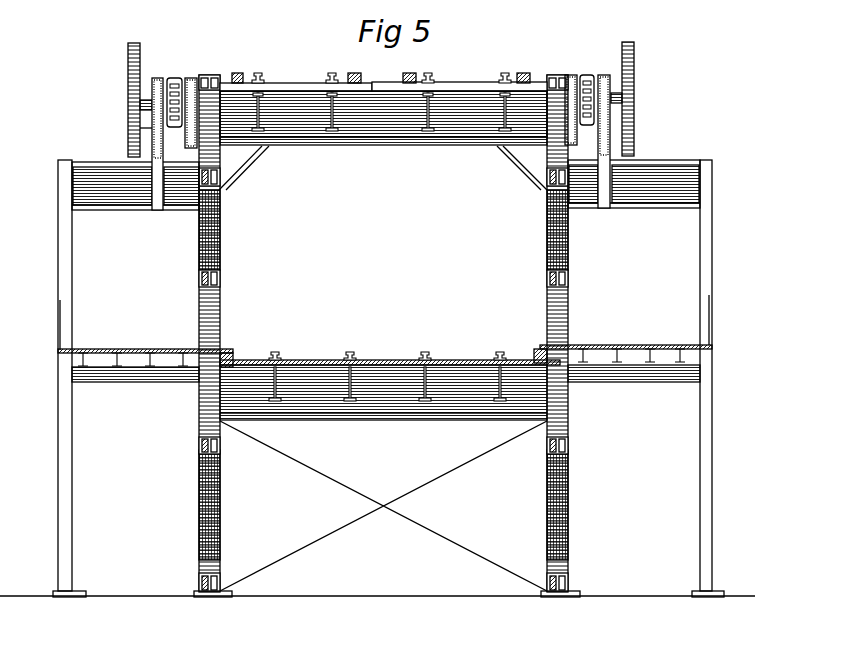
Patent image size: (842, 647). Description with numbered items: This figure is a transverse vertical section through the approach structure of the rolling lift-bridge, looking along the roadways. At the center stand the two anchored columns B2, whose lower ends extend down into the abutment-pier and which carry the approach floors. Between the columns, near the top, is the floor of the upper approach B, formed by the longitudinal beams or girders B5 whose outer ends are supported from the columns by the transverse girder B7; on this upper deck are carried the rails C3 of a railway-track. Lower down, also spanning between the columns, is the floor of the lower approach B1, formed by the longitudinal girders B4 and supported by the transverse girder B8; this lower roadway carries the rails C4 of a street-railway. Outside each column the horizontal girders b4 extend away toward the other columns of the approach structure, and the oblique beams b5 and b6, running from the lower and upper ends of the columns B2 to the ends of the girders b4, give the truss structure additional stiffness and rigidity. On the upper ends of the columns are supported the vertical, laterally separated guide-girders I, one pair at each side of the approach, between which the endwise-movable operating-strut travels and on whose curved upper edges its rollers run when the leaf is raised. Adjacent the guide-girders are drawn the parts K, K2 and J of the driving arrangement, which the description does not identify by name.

The toothed rack gear K2 is at (128, 90).
The sprocket drum K is at (175, 78).
The guide-girders I is at (191, 78).
The shaft J is at (150, 128).
The upper approach B is at (282, 72).
The rails C3 is at (330, 72).
The longitudinal beams or girders of the upper approach B5 is at (418, 116).
The transverse girder B7 is at (467, 130).
The oblique beams b6 is at (218, 164).
The horizontal girders b4 is at (220, 276).
The anchored columns B2 is at (221, 316).
The lower approach B1 is at (276, 360).
The rails C4 is at (350, 358).
The longitudinal beams or girders of the lower approach B4 is at (355, 390).
The transverse girder B8 is at (300, 414).
The oblique beams b5 is at (222, 478).